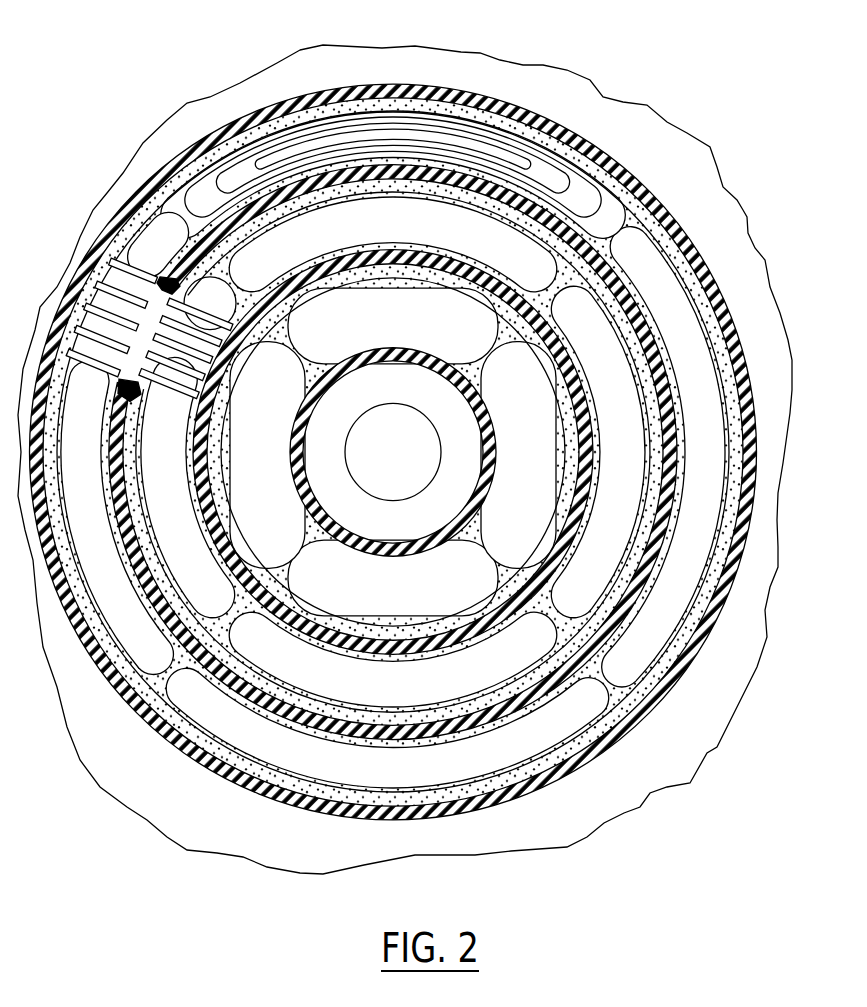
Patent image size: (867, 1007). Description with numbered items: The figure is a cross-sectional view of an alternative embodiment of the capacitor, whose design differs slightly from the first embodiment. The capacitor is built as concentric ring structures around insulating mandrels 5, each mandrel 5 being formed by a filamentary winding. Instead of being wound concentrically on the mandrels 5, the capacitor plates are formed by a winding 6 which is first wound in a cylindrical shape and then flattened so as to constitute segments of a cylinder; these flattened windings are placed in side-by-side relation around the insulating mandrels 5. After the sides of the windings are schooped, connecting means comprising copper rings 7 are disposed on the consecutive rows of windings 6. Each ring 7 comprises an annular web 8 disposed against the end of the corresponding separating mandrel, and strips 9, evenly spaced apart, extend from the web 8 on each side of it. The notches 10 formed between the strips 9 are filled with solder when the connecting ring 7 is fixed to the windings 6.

The insulating mandrel 5 is at (547, 203).
The winding 6 is at (415, 124).
The ring 7 is at (133, 393).
The annular web 8 is at (170, 284).
The strips 9 is at (194, 364).
The notches 10 is at (228, 290).